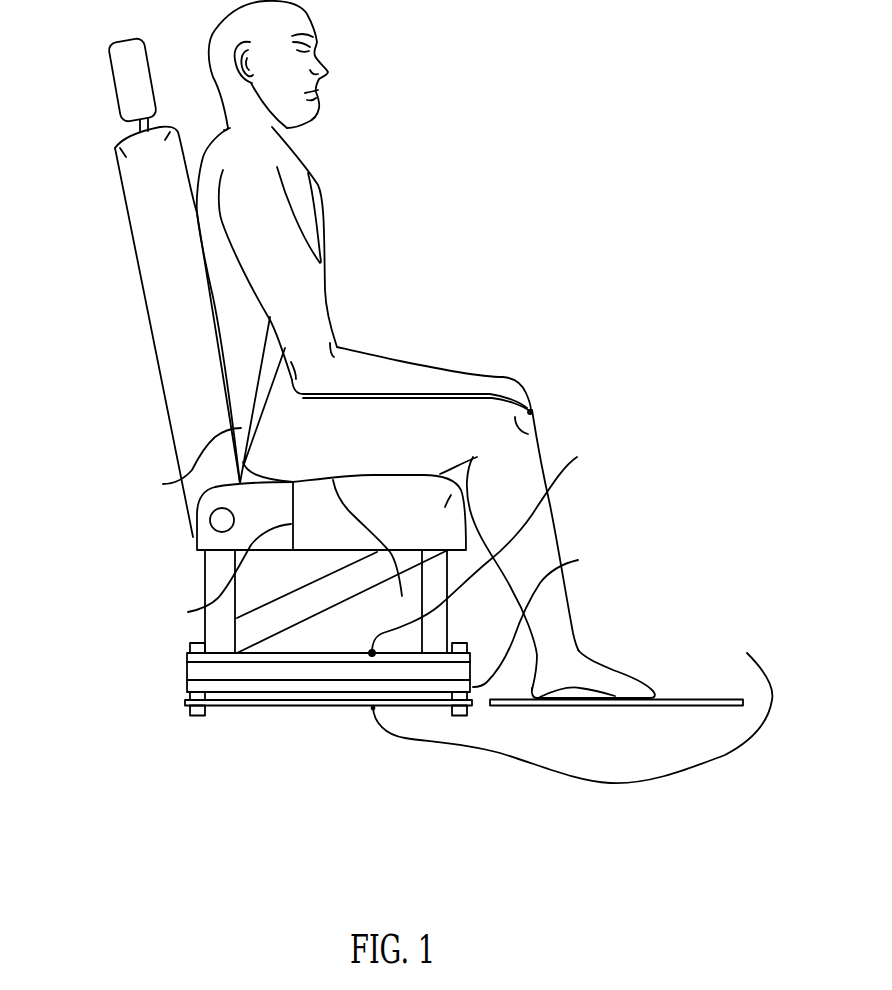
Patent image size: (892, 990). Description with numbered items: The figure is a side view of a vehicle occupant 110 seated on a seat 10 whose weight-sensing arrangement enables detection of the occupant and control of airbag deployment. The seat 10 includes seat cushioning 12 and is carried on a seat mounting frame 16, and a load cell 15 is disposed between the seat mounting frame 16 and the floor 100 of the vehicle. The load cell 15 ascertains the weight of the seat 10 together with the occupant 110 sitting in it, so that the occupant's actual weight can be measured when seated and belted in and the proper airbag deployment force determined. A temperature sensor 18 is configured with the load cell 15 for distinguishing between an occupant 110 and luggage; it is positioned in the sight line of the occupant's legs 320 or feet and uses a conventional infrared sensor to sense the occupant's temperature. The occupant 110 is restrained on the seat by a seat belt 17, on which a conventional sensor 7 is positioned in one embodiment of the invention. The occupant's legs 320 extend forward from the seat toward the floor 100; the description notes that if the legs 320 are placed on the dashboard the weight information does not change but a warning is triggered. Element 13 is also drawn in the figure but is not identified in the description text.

The sensor 7 is at (320, 201).
The seat 10 is at (133, 197).
The seat cushioning 12 is at (308, 588).
The seat cable 13 is at (372, 552).
The load cell 15 is at (185, 670).
The seat mounting frame 16 is at (489, 546).
The seat belt 17 is at (215, 408).
The temperature sensor 18 is at (543, 617).
The floor 100 is at (702, 699).
The occupant 110 is at (325, 264).
The legs 320 is at (600, 667).